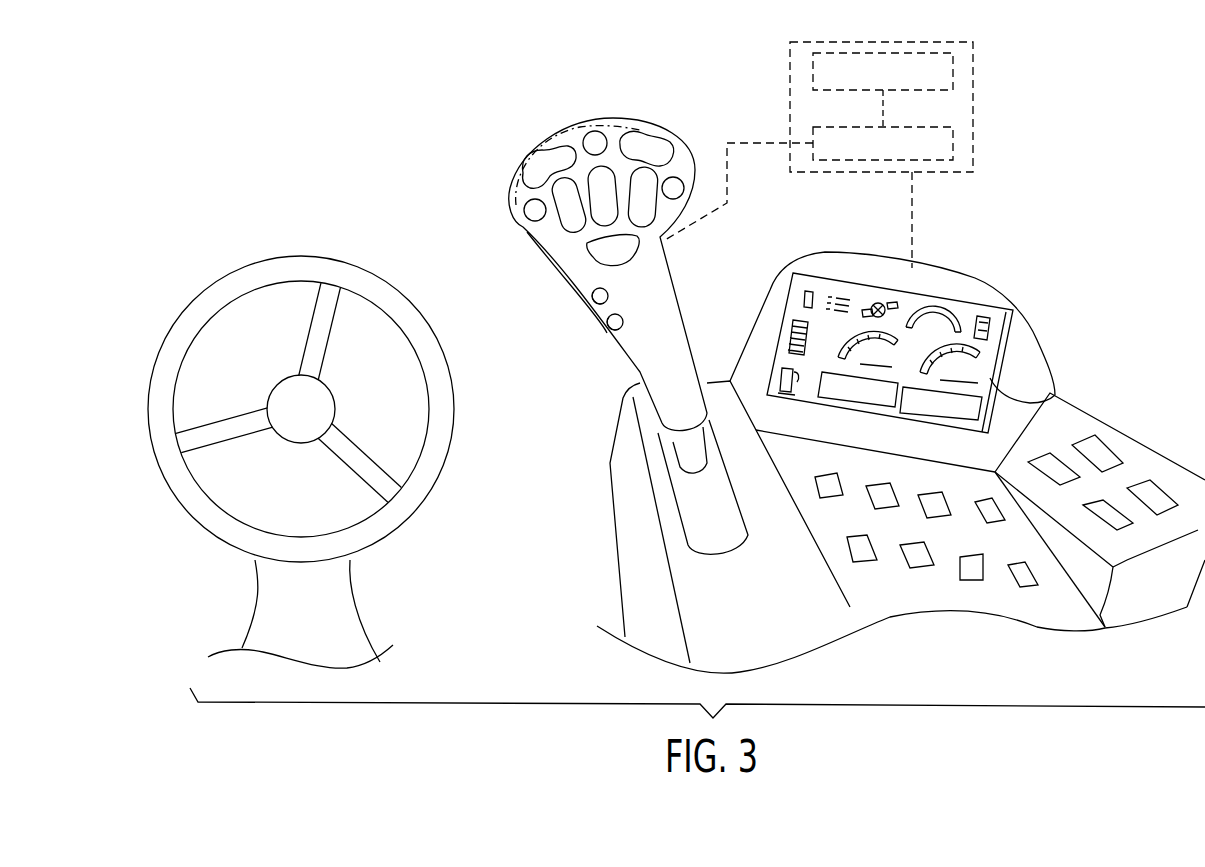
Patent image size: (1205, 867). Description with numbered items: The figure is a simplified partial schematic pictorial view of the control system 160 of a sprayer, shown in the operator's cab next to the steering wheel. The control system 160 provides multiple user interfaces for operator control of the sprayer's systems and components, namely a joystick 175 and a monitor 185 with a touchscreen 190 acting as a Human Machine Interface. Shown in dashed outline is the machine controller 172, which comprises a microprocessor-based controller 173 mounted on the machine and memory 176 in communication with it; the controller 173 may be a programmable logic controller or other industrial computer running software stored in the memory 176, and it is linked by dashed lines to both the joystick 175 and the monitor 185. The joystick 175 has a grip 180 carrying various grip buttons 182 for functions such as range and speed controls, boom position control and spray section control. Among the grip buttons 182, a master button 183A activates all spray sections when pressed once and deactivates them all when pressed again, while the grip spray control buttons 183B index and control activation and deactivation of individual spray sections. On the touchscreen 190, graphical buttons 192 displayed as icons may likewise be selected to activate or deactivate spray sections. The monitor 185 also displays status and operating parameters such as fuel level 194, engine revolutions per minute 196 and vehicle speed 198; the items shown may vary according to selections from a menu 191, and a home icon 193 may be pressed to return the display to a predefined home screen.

The control system 160 is at (430, 92).
The machine controller 172 is at (859, 155).
The microprocessor-based controller 173 is at (953, 143).
The joystick 175 is at (555, 358).
The memory 176 is at (813, 72).
The grip 180 is at (587, 266).
The grip buttons 182 is at (561, 226).
The master button 183A is at (605, 257).
The grip spray control buttons 183B is at (573, 140).
The monitor 185 is at (1020, 360).
The touchscreen 190 is at (941, 317).
The menu 191 is at (847, 290).
The graphical buttons 192 is at (882, 303).
The home icon 193 is at (805, 285).
The fuel level 194 is at (787, 402).
The engine revolutions per minute 196 is at (870, 415).
The vehicle speed 198 is at (985, 418).